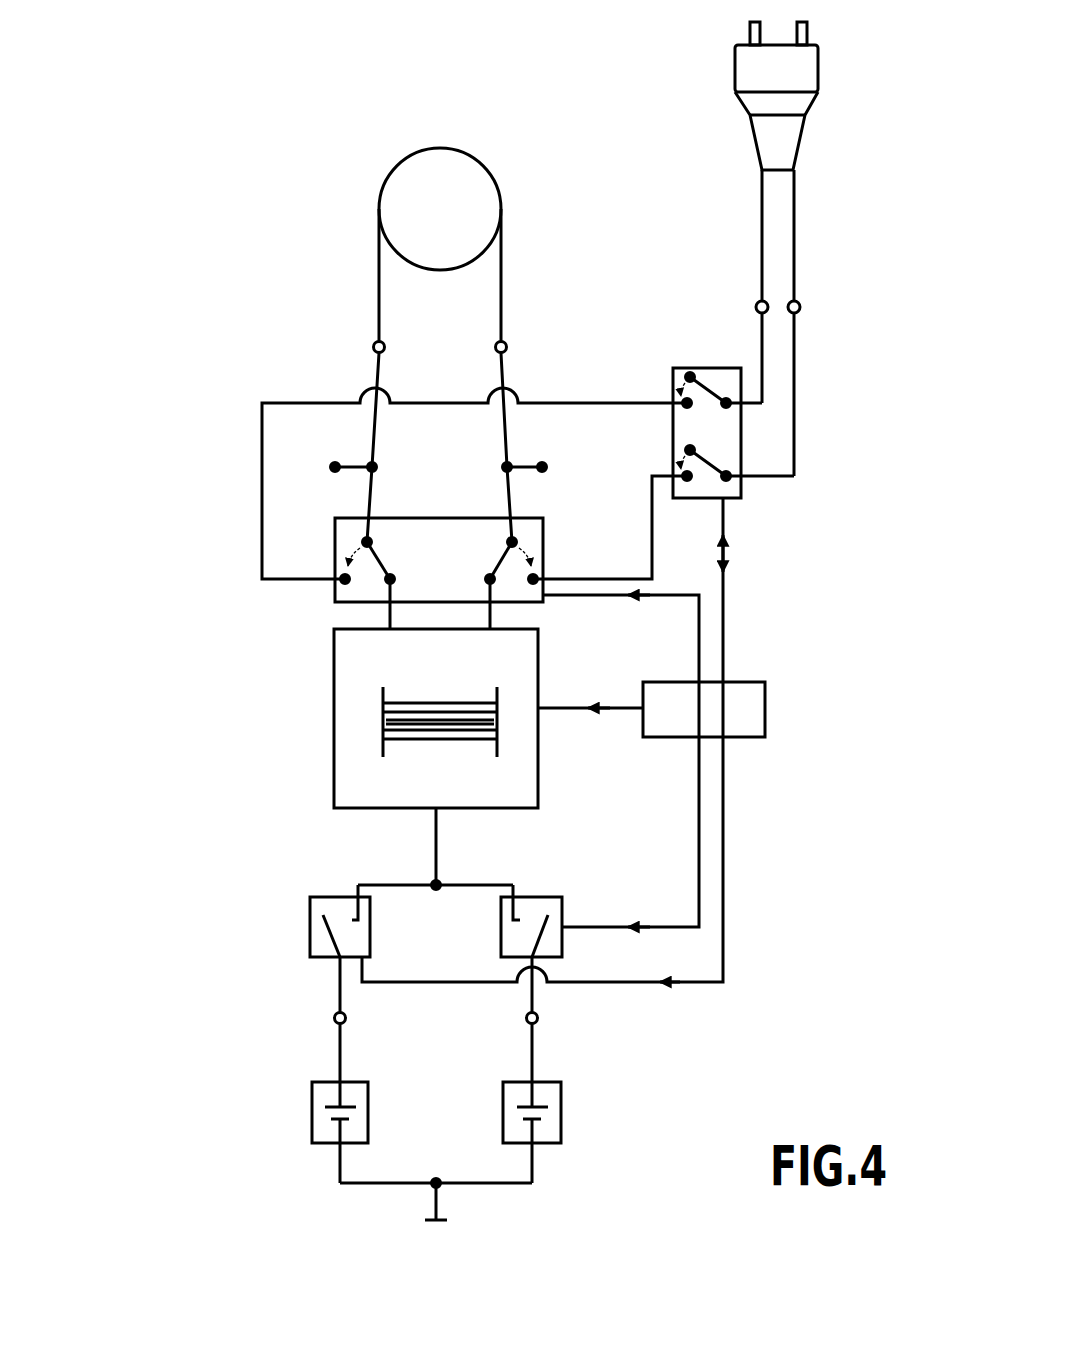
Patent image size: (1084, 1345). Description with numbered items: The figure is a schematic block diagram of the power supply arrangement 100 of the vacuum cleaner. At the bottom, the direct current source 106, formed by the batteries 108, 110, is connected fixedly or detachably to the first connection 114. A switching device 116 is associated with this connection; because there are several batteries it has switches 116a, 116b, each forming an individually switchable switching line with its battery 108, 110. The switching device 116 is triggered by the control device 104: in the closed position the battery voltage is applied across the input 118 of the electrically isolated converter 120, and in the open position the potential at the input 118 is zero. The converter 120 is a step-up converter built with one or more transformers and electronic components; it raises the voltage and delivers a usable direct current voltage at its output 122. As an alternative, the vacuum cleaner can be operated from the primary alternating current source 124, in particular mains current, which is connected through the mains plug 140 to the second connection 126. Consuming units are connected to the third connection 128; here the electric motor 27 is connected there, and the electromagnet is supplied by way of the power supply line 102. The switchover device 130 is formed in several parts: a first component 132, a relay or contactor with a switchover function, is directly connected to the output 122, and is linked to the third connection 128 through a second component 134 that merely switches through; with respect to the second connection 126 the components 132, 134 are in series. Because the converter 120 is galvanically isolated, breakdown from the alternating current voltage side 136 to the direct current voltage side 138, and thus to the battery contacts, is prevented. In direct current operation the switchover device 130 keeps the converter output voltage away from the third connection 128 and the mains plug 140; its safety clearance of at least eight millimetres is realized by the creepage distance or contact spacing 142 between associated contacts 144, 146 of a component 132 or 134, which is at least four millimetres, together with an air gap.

The electric motor 27 is at (490, 214).
The power supply arrangement 100 is at (190, 725).
The power supply line 102 is at (545, 467).
The control device 104 is at (753, 720).
The direct current source 106 is at (250, 1118).
The battery 108 is at (322, 1132).
The battery 110 is at (552, 1125).
The first connection 114 is at (348, 1020).
The switching device 116 is at (482, 920).
The switch 116a is at (310, 927).
The switch 116b is at (517, 897).
The input 118 is at (438, 808).
The electrically isolated converter 120 is at (334, 795).
The output 122 is at (505, 612).
The primary alternating current source 124 is at (806, 155).
The second connection 126 is at (768, 303).
The third connection 128 is at (496, 345).
The switchover device 130 is at (290, 602).
The first component 132 is at (340, 595).
The second component 134 is at (746, 490).
The alternating current voltage side 136 is at (203, 503).
The direct current voltage side 138 is at (190, 967).
The mains plug 140 is at (805, 78).
The contact spacing 142 is at (515, 580).
The contact 144 is at (486, 578).
The contact 146 is at (535, 579).